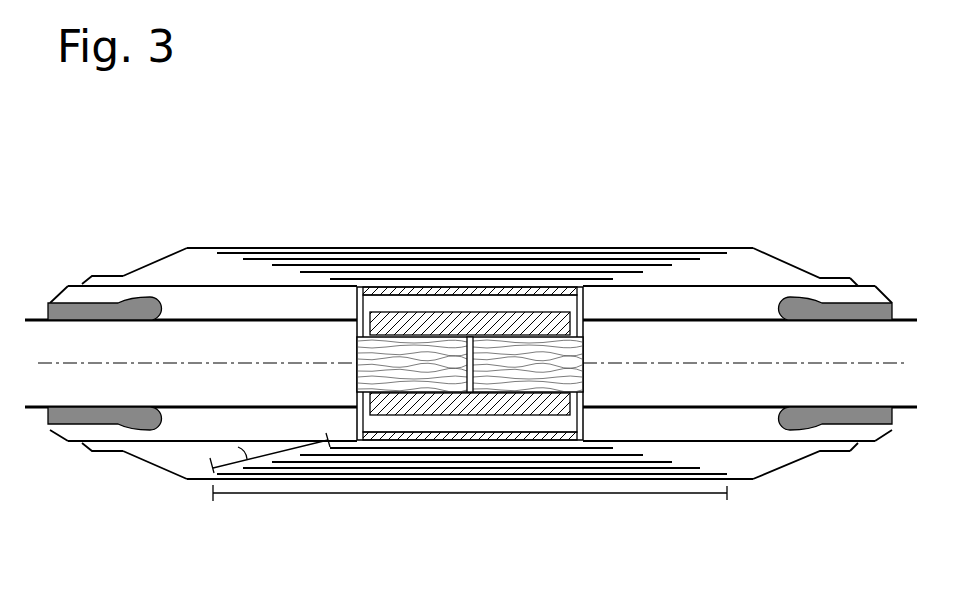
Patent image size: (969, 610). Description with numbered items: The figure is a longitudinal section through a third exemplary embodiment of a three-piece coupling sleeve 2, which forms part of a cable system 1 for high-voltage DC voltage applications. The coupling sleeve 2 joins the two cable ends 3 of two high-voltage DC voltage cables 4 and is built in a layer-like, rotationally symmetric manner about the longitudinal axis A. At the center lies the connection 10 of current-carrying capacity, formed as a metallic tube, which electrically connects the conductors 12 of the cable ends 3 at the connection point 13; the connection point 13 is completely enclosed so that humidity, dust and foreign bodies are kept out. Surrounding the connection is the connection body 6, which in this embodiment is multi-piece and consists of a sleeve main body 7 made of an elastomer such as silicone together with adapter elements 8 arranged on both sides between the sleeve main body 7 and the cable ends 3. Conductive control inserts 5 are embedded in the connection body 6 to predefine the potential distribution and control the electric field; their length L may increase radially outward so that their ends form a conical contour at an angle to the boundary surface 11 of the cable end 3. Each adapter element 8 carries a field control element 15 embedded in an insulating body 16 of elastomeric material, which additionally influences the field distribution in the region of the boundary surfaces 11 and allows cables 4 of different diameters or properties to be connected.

The cable system 1 is at (833, 151).
The coupling sleeve 2 is at (712, 192).
The cable end 3 is at (306, 397).
The high-voltage DC voltage cable 4 is at (50, 392).
The control insert 5 is at (398, 280).
The connection body 6 is at (623, 226).
The sleeve main body 7 is at (163, 277).
The adapter element 8 is at (230, 275).
The connection of current-carrying capacity 10 is at (463, 322).
The boundary surface 11 is at (697, 323).
The conductor 12 is at (420, 370).
The connection point 13 is at (473, 415).
The field control element 15 is at (820, 307).
The insulating body 16 is at (167, 273).
The longitudinal axis A is at (77, 363).
The length L is at (470, 506).